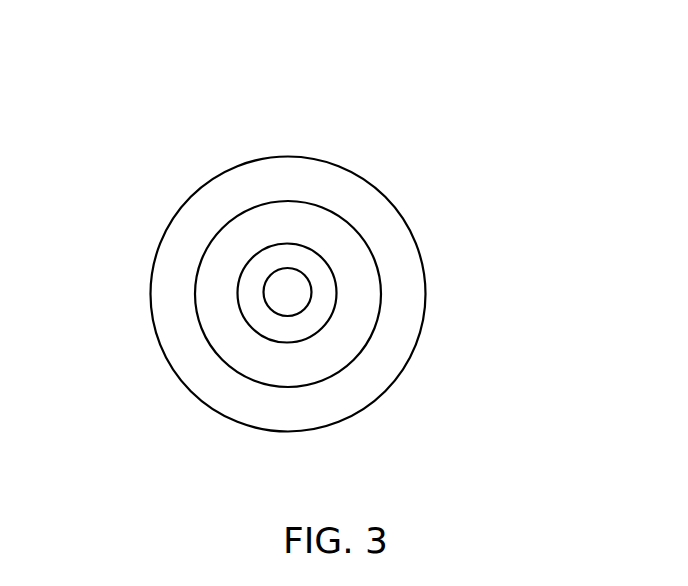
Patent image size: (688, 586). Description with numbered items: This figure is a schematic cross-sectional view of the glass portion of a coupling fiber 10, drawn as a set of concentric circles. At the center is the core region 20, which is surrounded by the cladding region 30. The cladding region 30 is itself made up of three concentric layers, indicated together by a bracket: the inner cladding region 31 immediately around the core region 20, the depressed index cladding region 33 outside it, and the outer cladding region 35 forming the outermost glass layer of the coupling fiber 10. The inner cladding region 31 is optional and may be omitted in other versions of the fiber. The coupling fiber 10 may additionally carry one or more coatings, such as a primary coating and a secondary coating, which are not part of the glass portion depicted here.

The coupling fiber 10 is at (138, 131).
The core region 20 is at (287, 295).
The cladding region 30 is at (543, 243).
The inner cladding region 31 is at (315, 271).
The depressed index cladding region 33 is at (353, 309).
The outer cladding region 35 is at (395, 343).